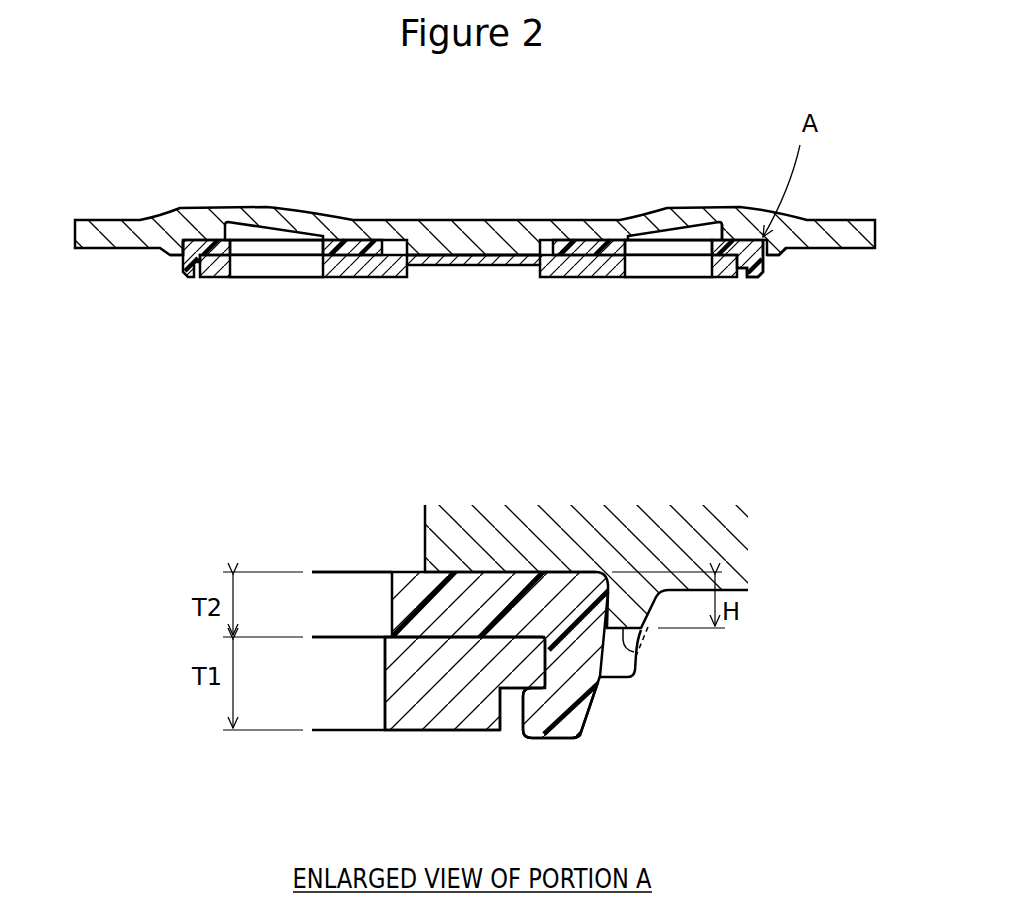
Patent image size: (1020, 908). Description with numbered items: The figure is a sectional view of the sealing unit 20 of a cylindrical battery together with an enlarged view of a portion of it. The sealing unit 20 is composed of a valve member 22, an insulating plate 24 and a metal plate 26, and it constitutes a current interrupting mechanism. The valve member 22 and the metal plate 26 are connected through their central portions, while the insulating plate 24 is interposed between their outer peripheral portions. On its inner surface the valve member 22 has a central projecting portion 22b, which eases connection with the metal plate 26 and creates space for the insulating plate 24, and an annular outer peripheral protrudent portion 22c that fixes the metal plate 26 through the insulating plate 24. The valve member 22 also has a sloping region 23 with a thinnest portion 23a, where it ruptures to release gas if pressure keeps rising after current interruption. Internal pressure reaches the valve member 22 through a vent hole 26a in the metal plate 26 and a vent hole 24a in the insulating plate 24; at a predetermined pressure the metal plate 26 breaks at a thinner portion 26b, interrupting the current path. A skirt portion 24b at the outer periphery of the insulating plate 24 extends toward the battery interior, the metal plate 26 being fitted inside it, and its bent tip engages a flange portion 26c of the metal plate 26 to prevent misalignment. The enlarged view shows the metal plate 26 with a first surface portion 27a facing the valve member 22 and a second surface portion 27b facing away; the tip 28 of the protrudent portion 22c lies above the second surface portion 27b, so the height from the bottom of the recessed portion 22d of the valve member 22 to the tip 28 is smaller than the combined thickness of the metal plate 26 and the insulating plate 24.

The sealing unit 20 is at (240, 194).
The valve member 22 is at (347, 214).
The central projecting portion 22b is at (487, 267).
The outer peripheral protrudent portion 22c is at (778, 257).
The recessed portion 22d is at (207, 268).
The sloping region 23 is at (665, 226).
The thinnest portion 23a is at (721, 221).
The insulating plate 24 is at (180, 273).
The vent hole 24a is at (690, 256).
The skirt portion 24b is at (755, 278).
The metal plate 26 is at (362, 282).
The vent hole 26a is at (650, 266).
The thinner portion 26b is at (402, 252).
The flange portion 26c is at (513, 698).
The first surface portion 27a is at (430, 612).
The second surface portion 27b is at (437, 731).
The tip 28 is at (641, 652).